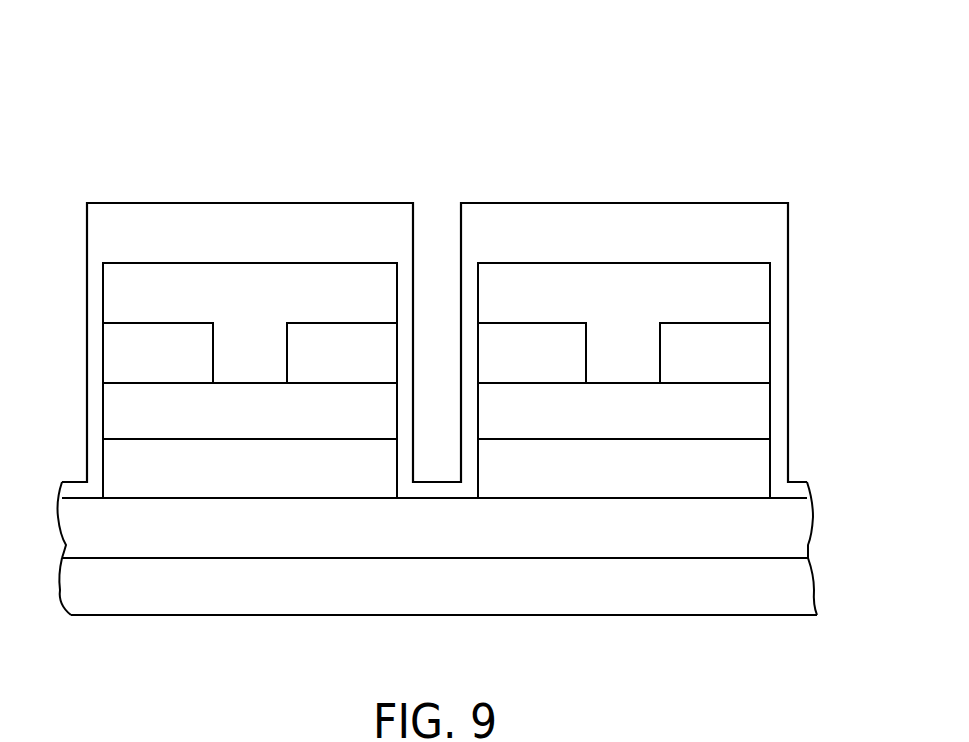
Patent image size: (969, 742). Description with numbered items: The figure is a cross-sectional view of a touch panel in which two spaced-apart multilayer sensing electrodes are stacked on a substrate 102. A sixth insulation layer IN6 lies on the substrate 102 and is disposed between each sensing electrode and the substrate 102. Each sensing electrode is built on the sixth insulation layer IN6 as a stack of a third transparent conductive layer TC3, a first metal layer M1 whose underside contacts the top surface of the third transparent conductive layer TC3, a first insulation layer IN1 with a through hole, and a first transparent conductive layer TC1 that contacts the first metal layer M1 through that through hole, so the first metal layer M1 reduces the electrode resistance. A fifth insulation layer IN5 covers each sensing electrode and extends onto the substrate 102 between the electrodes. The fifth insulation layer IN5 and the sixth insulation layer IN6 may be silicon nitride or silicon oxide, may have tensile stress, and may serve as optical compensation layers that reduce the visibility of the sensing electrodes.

The fifth insulation layer IN5 is at (759, 237).
The first transparent conductive layer TC1 is at (342, 301).
The first insulation layer IN1 is at (343, 366).
The first metal layer M1 is at (343, 419).
The third transparent conductive layer TC3 is at (342, 477).
The sixth insulation layer IN6 is at (757, 544).
The substrate 102 is at (443, 599).